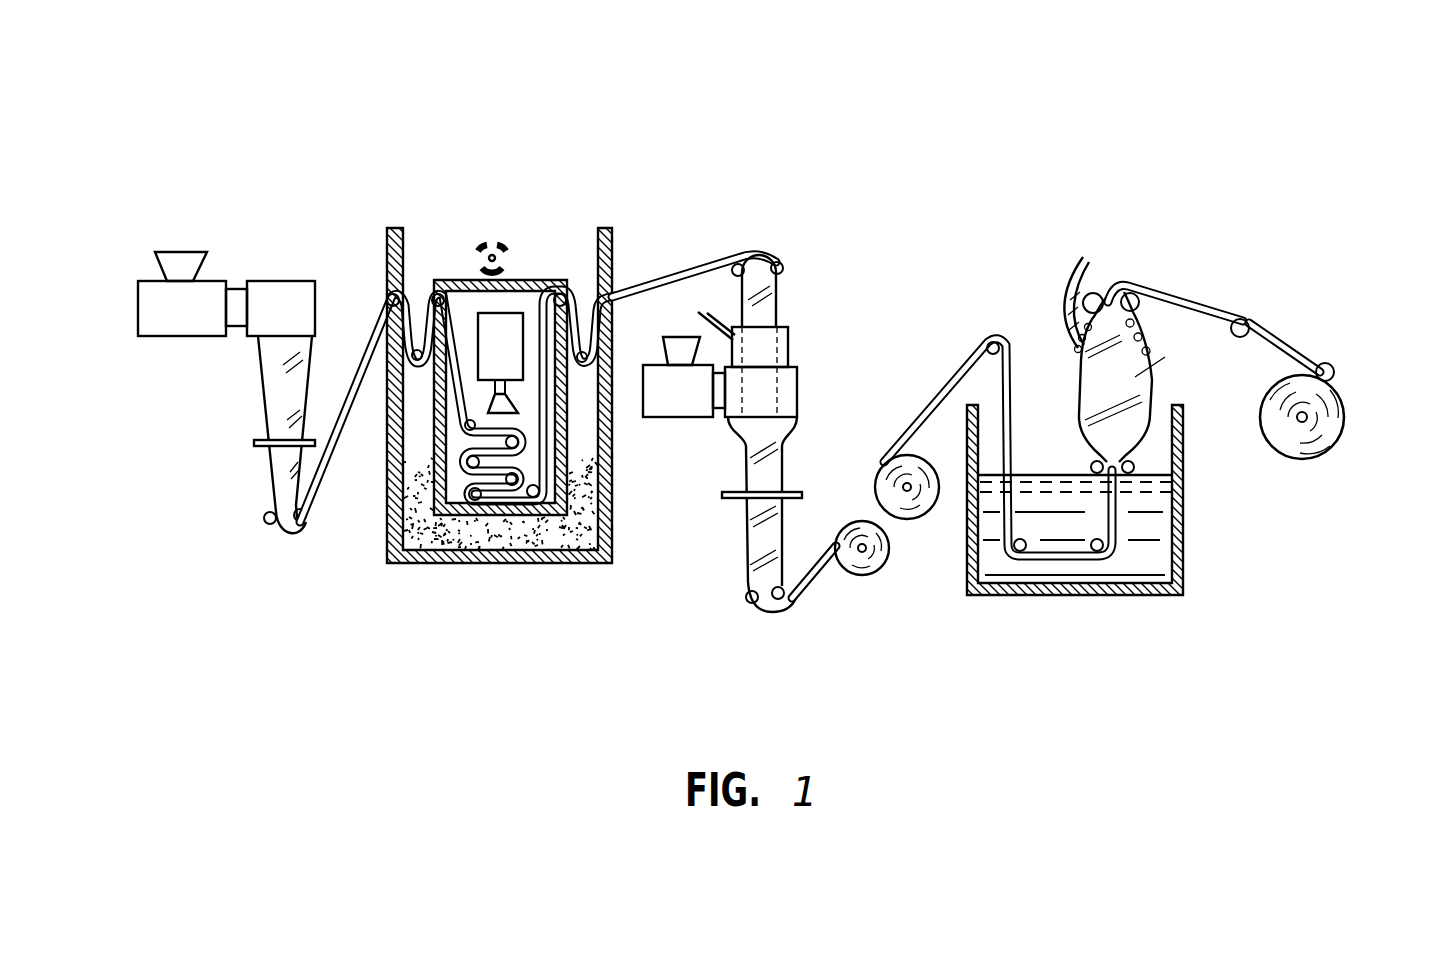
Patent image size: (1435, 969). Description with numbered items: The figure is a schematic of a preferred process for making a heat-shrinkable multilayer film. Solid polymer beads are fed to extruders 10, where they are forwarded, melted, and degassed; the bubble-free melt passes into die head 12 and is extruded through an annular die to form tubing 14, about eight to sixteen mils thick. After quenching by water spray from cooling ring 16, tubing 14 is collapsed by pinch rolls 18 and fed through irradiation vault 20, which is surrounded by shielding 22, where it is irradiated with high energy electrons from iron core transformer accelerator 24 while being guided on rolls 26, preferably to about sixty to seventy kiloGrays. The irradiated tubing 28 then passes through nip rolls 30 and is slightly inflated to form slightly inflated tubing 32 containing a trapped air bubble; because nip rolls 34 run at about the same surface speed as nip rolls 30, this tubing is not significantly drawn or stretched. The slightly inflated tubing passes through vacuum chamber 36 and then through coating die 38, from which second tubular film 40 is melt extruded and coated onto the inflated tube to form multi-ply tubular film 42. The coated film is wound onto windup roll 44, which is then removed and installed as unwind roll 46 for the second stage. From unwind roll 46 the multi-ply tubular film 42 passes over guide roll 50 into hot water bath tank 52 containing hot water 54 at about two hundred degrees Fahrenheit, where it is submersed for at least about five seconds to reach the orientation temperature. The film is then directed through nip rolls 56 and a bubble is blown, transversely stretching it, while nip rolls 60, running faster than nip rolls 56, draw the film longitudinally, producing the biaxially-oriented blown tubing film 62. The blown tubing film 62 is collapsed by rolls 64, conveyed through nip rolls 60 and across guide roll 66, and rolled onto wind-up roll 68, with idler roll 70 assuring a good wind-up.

The extruder 10 is at (160, 323).
The die head 12 is at (288, 296).
The tubing 14 is at (262, 378).
The cooling ring 16 is at (254, 443).
The pinch rolls 18 is at (264, 518).
The irradiation vault 20 is at (570, 462).
The shielding 22 is at (477, 565).
The iron core transformer accelerator 24 is at (505, 333).
The rolls 26 is at (462, 494).
The irradiated tubing 28 is at (641, 278).
The nip rolls 30 is at (784, 262).
The slightly inflated tubing 32 is at (781, 300).
The nip rolls 34 is at (745, 601).
The vacuum chamber 36 is at (790, 350).
The coating die 38 is at (800, 389).
The second tubular film 40 is at (736, 424).
The multi-ply tubular film 42 is at (785, 455).
The windup roll 44 is at (862, 580).
The unwind roll 46 is at (906, 522).
The guide roll 50 is at (990, 336).
The hot water bath tank 52 is at (1182, 560).
The hot water 54 is at (1157, 525).
The nip rolls 56 is at (1090, 460).
The nip rolls 60 is at (1140, 290).
The blown tubing film 62 is at (1205, 305).
The rolls 64 is at (1083, 288).
The guide roll 66 is at (1252, 318).
The wind-up roll 68 is at (1345, 420).
The idler roll 70 is at (1337, 368).